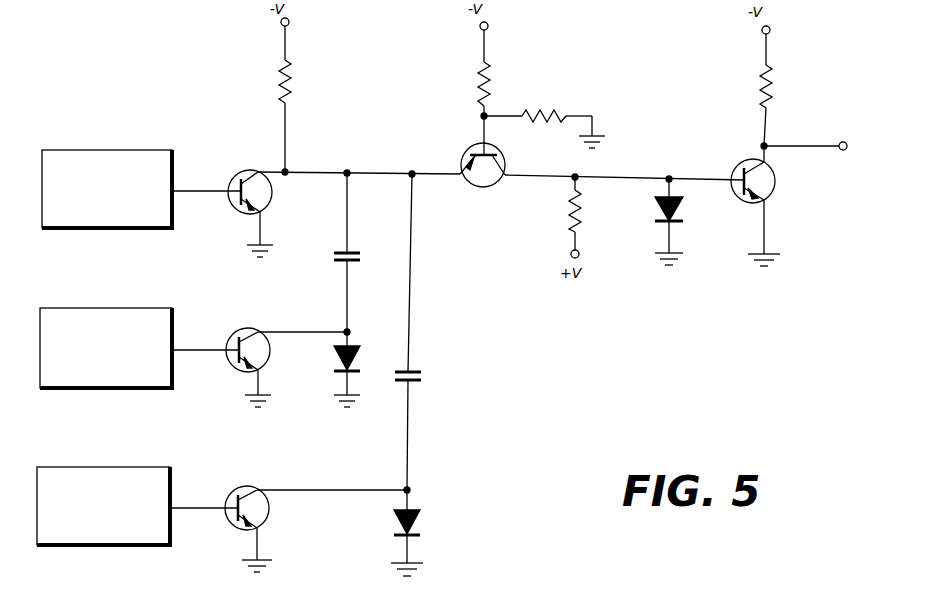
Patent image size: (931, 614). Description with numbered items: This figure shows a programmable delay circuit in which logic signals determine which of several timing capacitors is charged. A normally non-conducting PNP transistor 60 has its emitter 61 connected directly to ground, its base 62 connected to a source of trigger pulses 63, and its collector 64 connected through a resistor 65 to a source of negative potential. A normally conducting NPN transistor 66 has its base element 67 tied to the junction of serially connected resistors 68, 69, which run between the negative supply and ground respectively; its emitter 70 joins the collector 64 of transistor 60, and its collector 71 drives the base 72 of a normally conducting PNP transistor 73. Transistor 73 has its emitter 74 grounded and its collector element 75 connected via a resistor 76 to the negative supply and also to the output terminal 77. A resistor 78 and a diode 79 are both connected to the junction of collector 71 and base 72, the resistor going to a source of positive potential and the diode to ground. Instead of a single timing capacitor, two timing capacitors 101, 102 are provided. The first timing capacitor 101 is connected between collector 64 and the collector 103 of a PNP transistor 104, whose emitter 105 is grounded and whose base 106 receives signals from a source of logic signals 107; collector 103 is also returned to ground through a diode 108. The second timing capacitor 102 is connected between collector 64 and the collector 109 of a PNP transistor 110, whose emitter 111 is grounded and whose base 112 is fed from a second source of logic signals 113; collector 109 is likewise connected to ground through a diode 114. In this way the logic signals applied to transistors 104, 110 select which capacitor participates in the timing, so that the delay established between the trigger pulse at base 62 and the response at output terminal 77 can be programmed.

The PNP transistor 60 is at (253, 197).
The emitter 61 is at (260, 229).
The base 62 is at (194, 187).
The source of trigger pulses 63 is at (108, 150).
The collector 64 is at (246, 174).
The resistor 65 is at (292, 78).
The NPN transistor 66 is at (482, 180).
The base element 67 is at (476, 126).
The resistor 68 is at (478, 81).
The resistor 69 is at (540, 116).
The emitter 70 is at (462, 161).
The collector 71 is at (512, 162).
The base 72 is at (710, 178).
The PNP transistor 73 is at (769, 193).
The emitter 74 is at (764, 210).
The collector element 75 is at (752, 152).
The resistor 76 is at (762, 84).
The output terminal 77 is at (838, 152).
The resistor 78 is at (568, 212).
The diode 79 is at (658, 212).
The timing capacitor 101 is at (358, 257).
The timing capacitor 102 is at (420, 376).
The collector 103 is at (248, 332).
The PNP transistor 104 is at (286, 349).
The emitter 105 is at (258, 384).
The base 106 is at (196, 350).
The source of logic signals 107 is at (124, 308).
The diode 108 is at (358, 350).
The collector 109 is at (248, 490).
The PNP transistor 110 is at (316, 512).
The emitter 111 is at (262, 546).
The base 112 is at (196, 508).
The source of logic signals 113 is at (108, 466).
The diode 114 is at (420, 516).